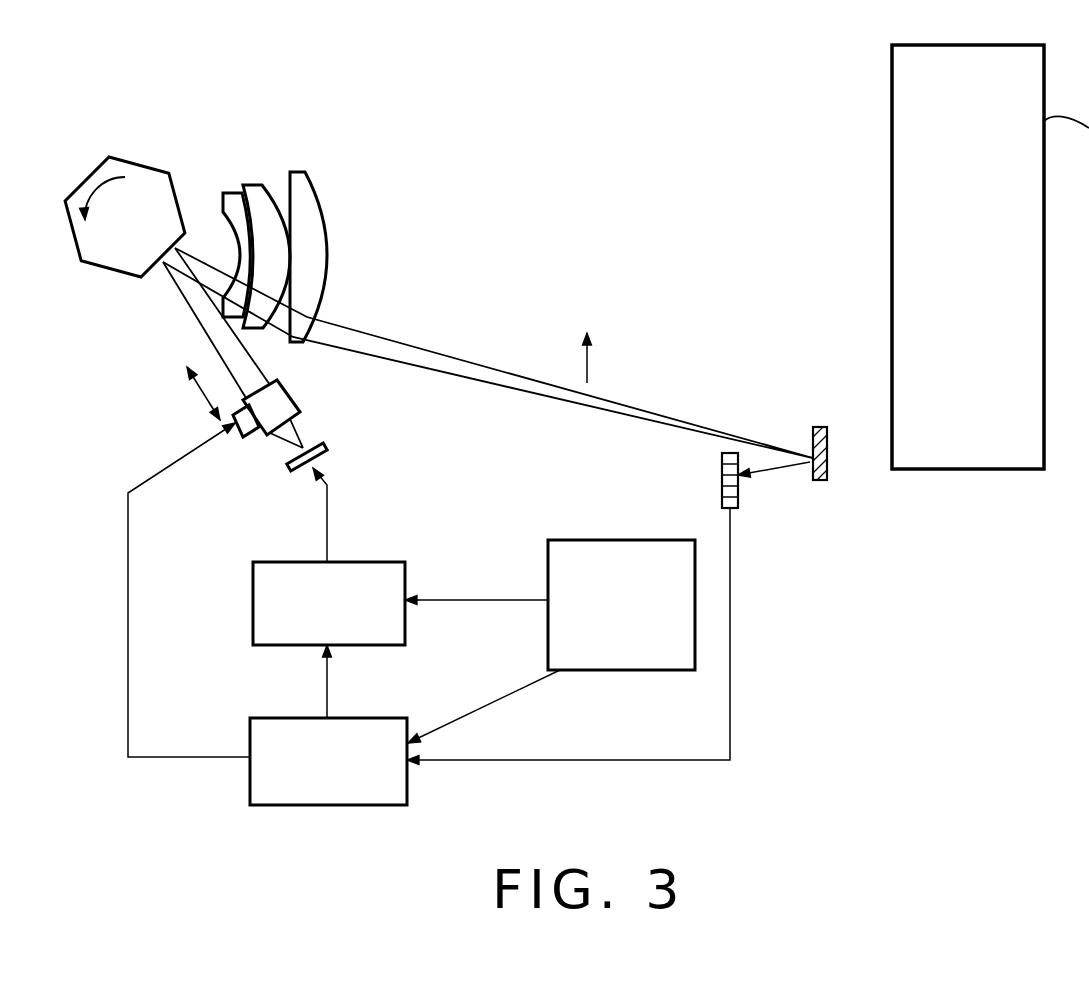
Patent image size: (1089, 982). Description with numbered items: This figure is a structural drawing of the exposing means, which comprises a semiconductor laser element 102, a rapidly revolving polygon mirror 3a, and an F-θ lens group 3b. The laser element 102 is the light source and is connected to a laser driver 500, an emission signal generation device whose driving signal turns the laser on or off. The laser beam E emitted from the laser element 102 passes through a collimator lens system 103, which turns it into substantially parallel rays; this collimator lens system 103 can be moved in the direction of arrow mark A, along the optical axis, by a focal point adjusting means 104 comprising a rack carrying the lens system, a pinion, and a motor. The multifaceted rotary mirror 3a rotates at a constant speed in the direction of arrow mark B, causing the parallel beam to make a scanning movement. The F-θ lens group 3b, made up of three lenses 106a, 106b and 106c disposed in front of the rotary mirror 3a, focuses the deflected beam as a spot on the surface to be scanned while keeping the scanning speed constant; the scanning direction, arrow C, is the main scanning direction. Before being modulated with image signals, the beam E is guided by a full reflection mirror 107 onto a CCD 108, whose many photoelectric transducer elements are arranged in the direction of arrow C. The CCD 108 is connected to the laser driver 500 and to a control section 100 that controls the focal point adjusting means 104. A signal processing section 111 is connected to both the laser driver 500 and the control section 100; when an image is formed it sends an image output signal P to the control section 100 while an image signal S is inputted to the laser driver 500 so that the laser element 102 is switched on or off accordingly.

The polygon mirror 3a is at (105, 268).
The F-θ lens group 3b is at (412, 88).
The lens of F-θ lens group 106a is at (232, 192).
The lens of F-θ lens group 106b is at (255, 183).
The lens of F-θ lens group 106c is at (298, 172).
The collimator lens system 103 is at (288, 392).
The focal point adjusting means 104 is at (255, 425).
The semiconductor laser element 102 is at (327, 448).
The laser driver 500 is at (253, 577).
The control section 100 is at (252, 727).
The signal processing section 111 is at (658, 670).
The full reflection mirror 107 is at (822, 425).
The CCD 108 is at (722, 477).
The arrow mark B is at (103, 217).
The arrow mark A is at (199, 395).
The laser beam E is at (428, 349).
The arrow C is at (588, 339).
The image signal S is at (497, 597).
The image output signal P is at (503, 697).